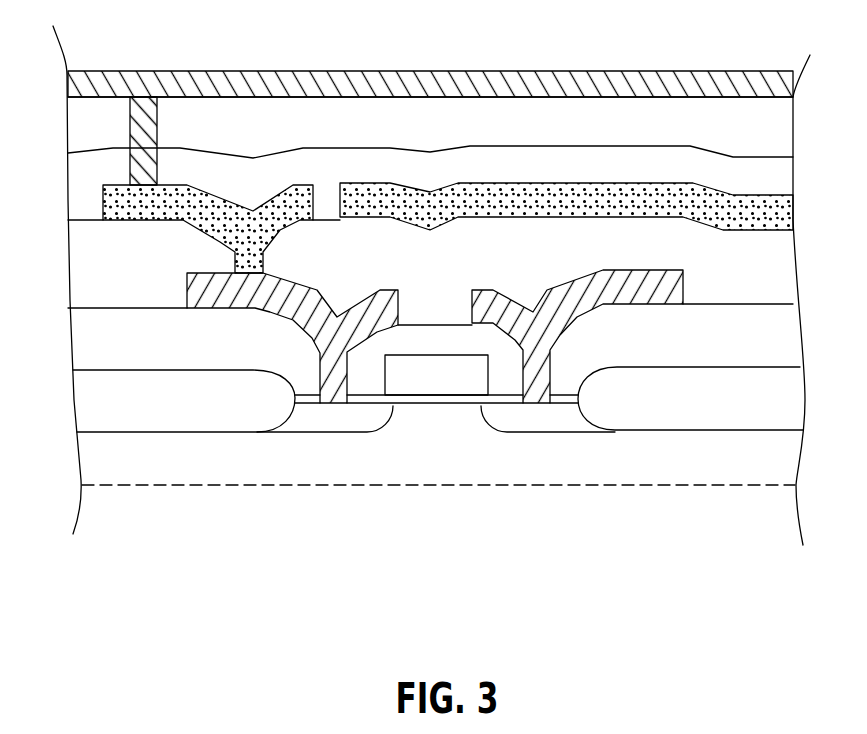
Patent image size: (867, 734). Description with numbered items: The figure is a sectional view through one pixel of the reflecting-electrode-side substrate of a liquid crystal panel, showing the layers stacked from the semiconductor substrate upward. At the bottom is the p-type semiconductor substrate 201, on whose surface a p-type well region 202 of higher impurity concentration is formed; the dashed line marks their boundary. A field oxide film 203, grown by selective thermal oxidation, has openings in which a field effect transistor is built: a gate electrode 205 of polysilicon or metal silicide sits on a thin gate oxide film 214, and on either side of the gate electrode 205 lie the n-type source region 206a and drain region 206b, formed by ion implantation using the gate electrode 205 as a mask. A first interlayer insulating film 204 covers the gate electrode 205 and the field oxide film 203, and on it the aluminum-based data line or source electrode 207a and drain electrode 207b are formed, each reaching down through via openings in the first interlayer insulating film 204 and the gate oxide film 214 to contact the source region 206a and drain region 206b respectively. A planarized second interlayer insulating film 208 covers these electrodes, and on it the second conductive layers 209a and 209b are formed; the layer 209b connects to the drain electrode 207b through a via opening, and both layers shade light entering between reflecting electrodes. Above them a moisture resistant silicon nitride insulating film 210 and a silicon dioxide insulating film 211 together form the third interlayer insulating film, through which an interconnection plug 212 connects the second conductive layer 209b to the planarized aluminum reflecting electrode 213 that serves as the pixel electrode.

The semiconductor substrate 201 is at (438, 503).
The well region 202 is at (110, 471).
The field oxide film 203 is at (763, 408).
The first interlayer insulating film 204 is at (102, 343).
The gate electrode 205 is at (413, 405).
The source region 206a is at (555, 418).
The drain region 206b is at (332, 427).
The data line (source electrode) 207a is at (588, 285).
The drain electrode 207b is at (200, 288).
The second interlayer insulating film 208 is at (757, 282).
The second conductive layer (light leakage preventing layer) 209a is at (613, 193).
The second conductive layer (interconnecting conductive layer) 209b is at (118, 202).
The insulating film 210 is at (738, 172).
The insulating film 211 is at (518, 127).
The interconnection plug 212 is at (145, 117).
The reflecting electrode 213 is at (420, 83).
The gate oxide film 214 is at (453, 405).